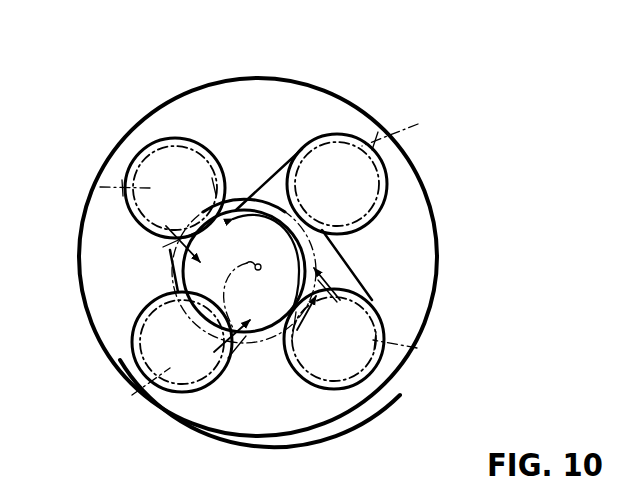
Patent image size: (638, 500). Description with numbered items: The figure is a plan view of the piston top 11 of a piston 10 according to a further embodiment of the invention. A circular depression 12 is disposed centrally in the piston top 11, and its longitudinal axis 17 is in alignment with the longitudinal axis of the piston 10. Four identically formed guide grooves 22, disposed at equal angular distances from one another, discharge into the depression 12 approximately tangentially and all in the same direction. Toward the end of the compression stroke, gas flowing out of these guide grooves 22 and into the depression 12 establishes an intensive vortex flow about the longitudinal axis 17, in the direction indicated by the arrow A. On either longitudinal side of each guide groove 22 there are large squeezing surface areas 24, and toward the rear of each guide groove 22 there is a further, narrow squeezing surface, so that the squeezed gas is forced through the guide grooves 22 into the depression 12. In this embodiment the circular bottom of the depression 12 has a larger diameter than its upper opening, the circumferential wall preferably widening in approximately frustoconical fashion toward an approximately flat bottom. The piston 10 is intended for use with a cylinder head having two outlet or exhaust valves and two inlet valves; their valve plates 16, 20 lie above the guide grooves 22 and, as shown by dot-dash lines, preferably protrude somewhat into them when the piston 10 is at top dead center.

The piston 10 is at (184, 168).
The piston top 11 is at (415, 223).
The circular depression 12 is at (308, 247).
The valve plates 16 is at (100, 187).
The longitudinal axis 17 is at (198, 293).
The valve plates 20 is at (132, 395).
The guide grooves 22 is at (148, 175).
The squeezing surface areas 24 is at (247, 414).
The arrow A is at (243, 214).